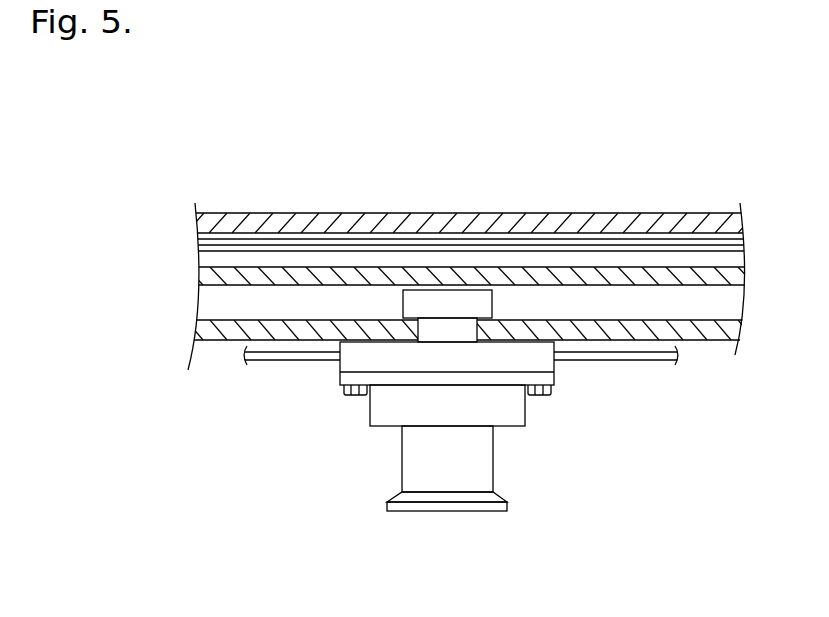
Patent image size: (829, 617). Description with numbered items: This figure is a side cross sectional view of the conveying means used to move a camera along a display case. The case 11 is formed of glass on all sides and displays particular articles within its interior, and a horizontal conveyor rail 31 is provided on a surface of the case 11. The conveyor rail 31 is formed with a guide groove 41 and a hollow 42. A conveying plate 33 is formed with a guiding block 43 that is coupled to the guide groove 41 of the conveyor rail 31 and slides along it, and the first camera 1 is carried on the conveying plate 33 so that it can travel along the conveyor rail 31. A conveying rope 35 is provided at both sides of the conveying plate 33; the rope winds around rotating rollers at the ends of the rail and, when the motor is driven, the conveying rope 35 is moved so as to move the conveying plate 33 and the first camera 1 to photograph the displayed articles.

The case 11 is at (306, 222).
The hollow 42 is at (585, 262).
The guide groove 41 is at (703, 308).
The horizontal conveyor rail 31 is at (225, 344).
The conveying rope 35 is at (642, 250).
The guiding block 43 is at (442, 307).
The conveying plate 33 is at (355, 362).
The first camera 1 is at (423, 472).